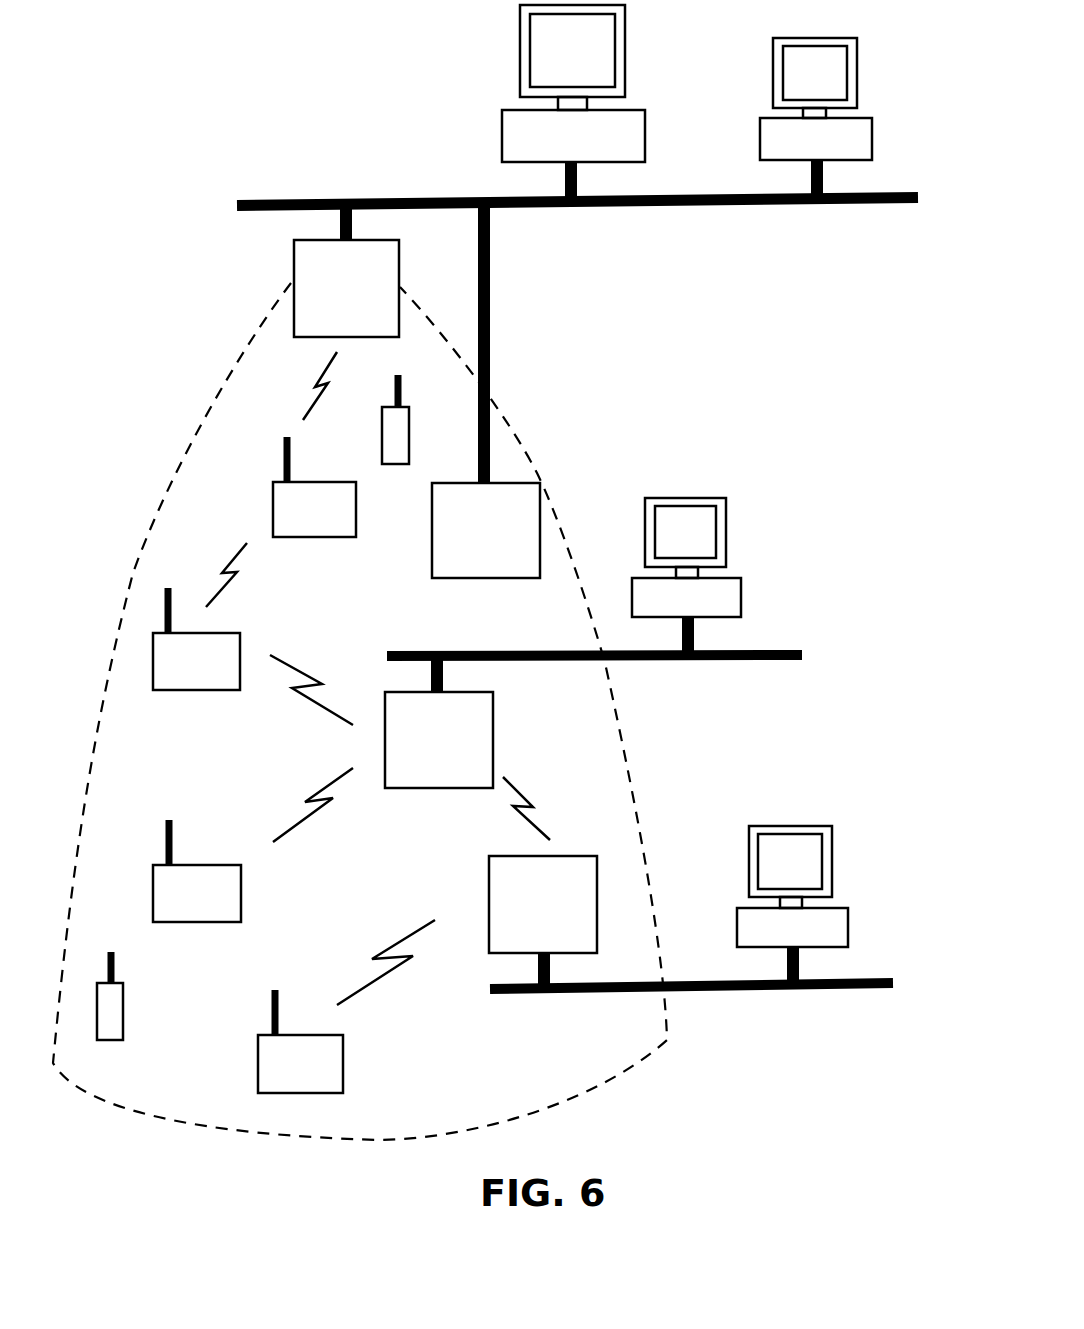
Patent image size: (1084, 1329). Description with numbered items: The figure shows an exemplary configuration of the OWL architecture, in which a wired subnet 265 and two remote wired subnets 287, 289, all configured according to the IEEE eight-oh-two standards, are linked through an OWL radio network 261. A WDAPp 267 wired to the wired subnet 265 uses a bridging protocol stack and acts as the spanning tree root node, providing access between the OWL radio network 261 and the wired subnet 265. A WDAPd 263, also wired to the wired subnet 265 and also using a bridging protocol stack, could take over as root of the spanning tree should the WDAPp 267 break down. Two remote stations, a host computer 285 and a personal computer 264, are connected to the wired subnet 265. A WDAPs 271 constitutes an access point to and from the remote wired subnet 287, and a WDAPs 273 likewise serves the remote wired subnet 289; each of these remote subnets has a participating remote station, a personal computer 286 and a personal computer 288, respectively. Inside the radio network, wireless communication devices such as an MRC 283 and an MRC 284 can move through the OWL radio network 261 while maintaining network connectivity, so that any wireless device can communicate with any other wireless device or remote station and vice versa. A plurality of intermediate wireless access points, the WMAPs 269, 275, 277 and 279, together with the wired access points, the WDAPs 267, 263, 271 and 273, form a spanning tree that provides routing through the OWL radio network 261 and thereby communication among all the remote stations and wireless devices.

The OWL radio network 261 is at (165, 480).
The WDAPd 263 is at (472, 578).
The personal computer 264 is at (857, 70).
The wired subnet 265 is at (308, 199).
The WDAPp 267 is at (294, 276).
The WMAP 269 is at (273, 514).
The WDAPs 271 is at (493, 747).
The WDAPs 273 is at (597, 909).
The WMAP 275 is at (241, 650).
The WMAP 277 is at (343, 1078).
The WMAP 279 is at (241, 908).
The MRC 283 is at (382, 453).
The MRC 284 is at (123, 1012).
The host computer 285 is at (625, 73).
The personal computer 286 is at (726, 523).
The remote wired subnet 287 is at (763, 662).
The personal computer 288 is at (832, 857).
The remote wired subnet 289 is at (862, 990).